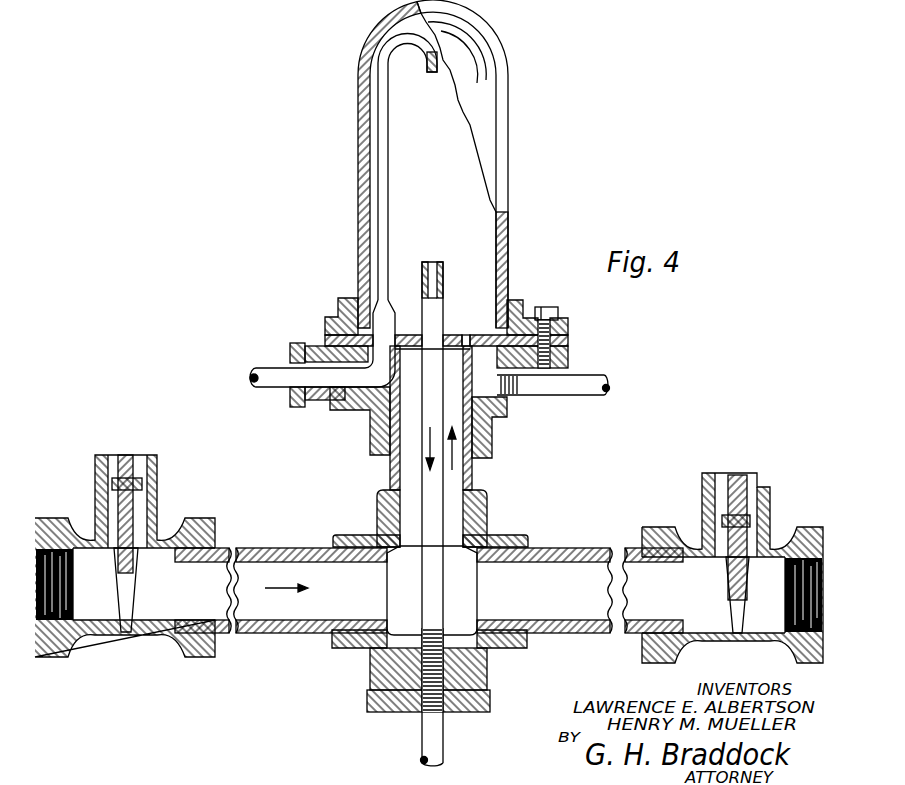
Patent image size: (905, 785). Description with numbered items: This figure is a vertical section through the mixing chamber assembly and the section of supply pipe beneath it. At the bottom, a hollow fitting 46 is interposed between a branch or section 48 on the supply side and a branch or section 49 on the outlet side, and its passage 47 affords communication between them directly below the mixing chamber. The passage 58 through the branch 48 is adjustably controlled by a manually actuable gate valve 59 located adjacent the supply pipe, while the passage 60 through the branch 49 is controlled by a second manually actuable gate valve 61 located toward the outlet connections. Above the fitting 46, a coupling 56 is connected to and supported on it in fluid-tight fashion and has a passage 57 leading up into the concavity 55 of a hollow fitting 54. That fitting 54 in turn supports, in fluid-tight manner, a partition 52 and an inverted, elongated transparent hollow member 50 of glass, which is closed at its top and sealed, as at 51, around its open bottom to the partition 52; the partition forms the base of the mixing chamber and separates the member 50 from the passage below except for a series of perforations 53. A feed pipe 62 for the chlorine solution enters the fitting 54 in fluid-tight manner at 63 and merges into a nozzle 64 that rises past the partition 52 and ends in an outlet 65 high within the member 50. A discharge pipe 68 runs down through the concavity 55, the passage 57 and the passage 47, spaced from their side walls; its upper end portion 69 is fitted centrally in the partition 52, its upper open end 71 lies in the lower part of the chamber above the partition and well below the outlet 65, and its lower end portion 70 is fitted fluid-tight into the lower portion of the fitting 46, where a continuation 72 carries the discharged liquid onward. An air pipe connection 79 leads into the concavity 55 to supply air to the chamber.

The hollow fitting 46 is at (497, 535).
The passage 47 is at (350, 647).
The branch or section 48 is at (255, 628).
The branch or section 49 is at (565, 632).
The hollow member 50 is at (497, 84).
The seal 51 is at (568, 330).
The partition 52 is at (477, 335).
The perforations 53 is at (456, 335).
The hollow fitting 54 is at (330, 340).
The concavity 55 is at (478, 386).
The coupling 56 is at (390, 470).
The passage 57 is at (470, 481).
The passage 58 is at (262, 565).
The manually actuable valve 59 is at (123, 510).
The passage 60 is at (580, 572).
The manually actuable valve 61 is at (725, 525).
The feed pipe 62 is at (272, 370).
The fluid-tight entry 63 is at (313, 397).
The nozzle 64 is at (387, 190).
The outlet 65 is at (434, 72).
The discharge pipe 68 is at (430, 500).
The upper end portion 69 is at (447, 346).
The lower end portion 70 is at (432, 650).
The upper open end 71 is at (430, 262).
The continuation 72 is at (438, 745).
The pipe connection 79 is at (592, 383).